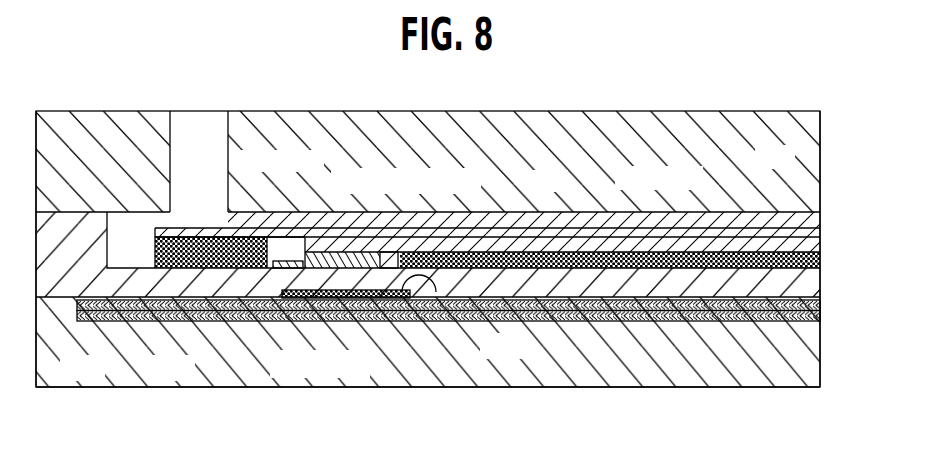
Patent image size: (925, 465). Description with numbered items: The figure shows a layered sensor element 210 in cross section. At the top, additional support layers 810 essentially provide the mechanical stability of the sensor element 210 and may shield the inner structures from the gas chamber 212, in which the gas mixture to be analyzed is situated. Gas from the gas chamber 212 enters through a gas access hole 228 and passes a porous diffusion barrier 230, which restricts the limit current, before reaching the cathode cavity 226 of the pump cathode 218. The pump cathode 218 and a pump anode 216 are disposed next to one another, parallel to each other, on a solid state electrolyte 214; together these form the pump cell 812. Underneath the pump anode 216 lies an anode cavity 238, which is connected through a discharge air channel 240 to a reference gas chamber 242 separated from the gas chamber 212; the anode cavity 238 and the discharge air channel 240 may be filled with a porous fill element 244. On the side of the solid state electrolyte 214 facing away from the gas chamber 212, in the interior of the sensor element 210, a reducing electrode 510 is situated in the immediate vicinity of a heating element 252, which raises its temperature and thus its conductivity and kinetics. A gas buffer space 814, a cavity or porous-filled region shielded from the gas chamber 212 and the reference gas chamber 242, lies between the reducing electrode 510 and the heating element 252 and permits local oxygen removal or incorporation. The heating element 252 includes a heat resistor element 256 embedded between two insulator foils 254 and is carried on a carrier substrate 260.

The sensor element 210 is at (520, 94).
The gas chamber 212 is at (243, 75).
The gas access hole 228 is at (180, 108).
The support layers 810 is at (797, 132).
The reference gas chamber 242 is at (877, 271).
The diffusion barrier 230 is at (240, 250).
The cathode cavity 226 is at (282, 247).
The pump cathode 218 is at (343, 215).
The pump anode 216 is at (397, 258).
The anode cavity 238 is at (420, 252).
The solid state electrolyte 214 is at (540, 265).
The discharge air channel 240 is at (610, 214).
The porous fill element 244 is at (614, 262).
The carrier substrate 260 is at (678, 368).
The insulator foils 254 is at (97, 322).
The heat resistor element 256 is at (173, 312).
The gas buffer space 814 is at (300, 277).
The pump cell 812 is at (390, 278).
The reducing electrode 510 is at (436, 292).
The heating element 252 is at (830, 348).